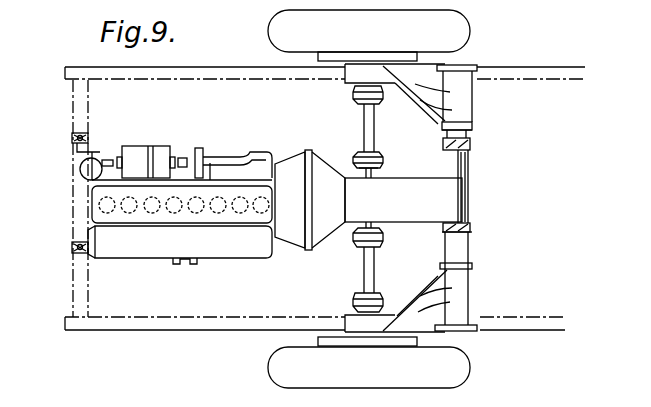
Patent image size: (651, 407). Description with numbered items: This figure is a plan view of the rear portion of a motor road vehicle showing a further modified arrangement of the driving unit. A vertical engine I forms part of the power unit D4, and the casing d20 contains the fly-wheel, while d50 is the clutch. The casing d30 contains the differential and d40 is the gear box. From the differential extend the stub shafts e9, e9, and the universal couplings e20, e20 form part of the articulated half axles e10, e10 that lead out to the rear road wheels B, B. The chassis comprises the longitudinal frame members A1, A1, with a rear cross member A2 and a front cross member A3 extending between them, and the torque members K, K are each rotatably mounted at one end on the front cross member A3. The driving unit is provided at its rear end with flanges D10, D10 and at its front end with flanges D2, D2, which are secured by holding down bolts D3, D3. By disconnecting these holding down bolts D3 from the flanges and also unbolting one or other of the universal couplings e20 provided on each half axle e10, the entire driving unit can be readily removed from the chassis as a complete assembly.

The longitudinal frame member A1 is at (240, 66).
The rear cross member A2 is at (82, 108).
The front cross member A3 is at (462, 250).
The rear road wheel B is at (452, 28).
The flange D2 is at (468, 147).
The holding down bolt D3 is at (89, 132).
The power unit D4 is at (254, 240).
The flange D10 is at (96, 137).
The vertical engine I is at (146, 242).
The torque member K is at (414, 90).
The casing containing the fly-wheel d20 is at (296, 170).
The casing containing the differential d30 is at (358, 203).
The gear box d40 is at (453, 193).
The clutch d50 is at (325, 232).
The shaft e is at (366, 246).
The stub shaft e9 is at (363, 170).
The articulated half axle e10 is at (366, 122).
The universal coupling e20 is at (357, 94).